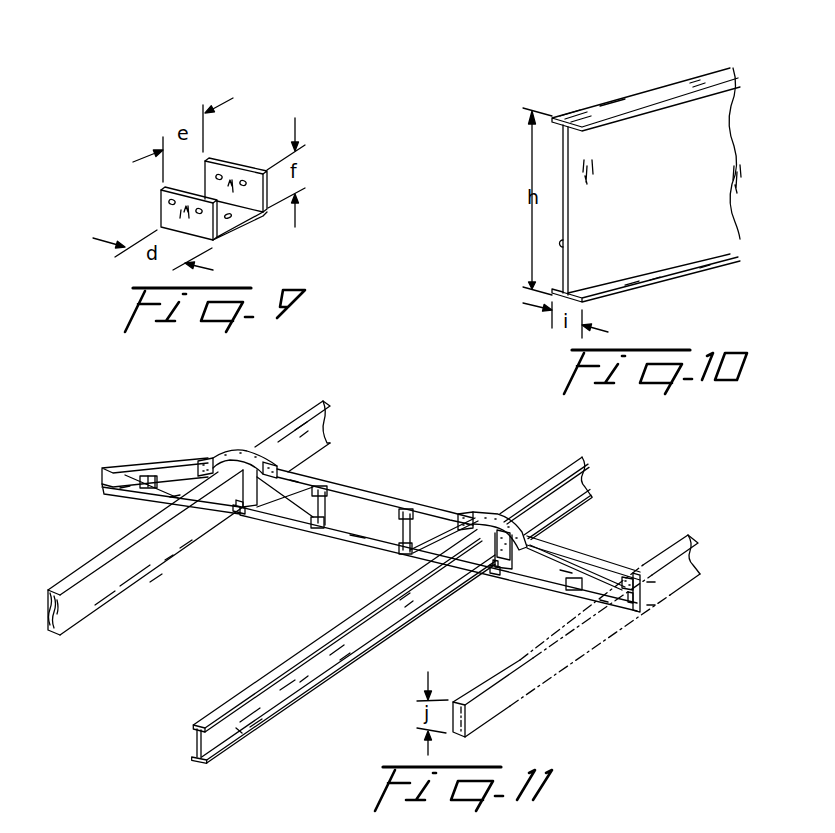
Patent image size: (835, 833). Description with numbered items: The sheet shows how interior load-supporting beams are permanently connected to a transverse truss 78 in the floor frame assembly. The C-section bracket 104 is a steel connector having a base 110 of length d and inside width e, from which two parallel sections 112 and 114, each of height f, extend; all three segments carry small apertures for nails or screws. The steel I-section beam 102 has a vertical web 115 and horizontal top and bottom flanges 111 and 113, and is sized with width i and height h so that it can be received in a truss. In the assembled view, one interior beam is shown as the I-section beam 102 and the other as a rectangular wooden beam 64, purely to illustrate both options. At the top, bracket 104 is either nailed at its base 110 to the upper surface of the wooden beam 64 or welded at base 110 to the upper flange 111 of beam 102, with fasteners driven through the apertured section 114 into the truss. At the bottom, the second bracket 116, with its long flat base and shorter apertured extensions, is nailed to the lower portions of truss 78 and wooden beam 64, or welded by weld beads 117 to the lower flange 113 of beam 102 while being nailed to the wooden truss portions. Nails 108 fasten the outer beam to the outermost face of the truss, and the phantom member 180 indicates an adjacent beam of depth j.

In FIG. 11, the load-supporting inner beam 64 is at (87, 602).
In FIG. 11, the truss 78 is at (381, 495).
In FIG. 10, the I-section steel beam 102 is at (646, 168).
In FIG. 11, the I-section steel beam 102 is at (377, 620).
In FIG. 9, the C-section bracket 104 is at (157, 178).
In FIG. 11, the C-section bracket 104 is at (238, 513).
In FIG. 11, the nails 108 is at (646, 592).
In FIG. 9, the base 110 is at (237, 226).
In FIG. 10, the top flange 111 is at (667, 110).
In FIG. 11, the top flange 111 is at (462, 592).
In FIG. 9, the parallel section 112 is at (160, 190).
In FIG. 10, the bottom flange 113 is at (697, 268).
In FIG. 11, the bottom flange 113 is at (583, 461).
In FIG. 9, the parallel section 114 is at (222, 176).
In FIG. 10, the vertical web 115 is at (567, 247).
In FIG. 11, the vertical web 115 is at (238, 731).
In FIG. 11, the truss to beam connecting bracket 116 is at (232, 447).
In FIG. 11, the weld beads 117 is at (483, 517).
In FIG. 11, the phantom beam 180 is at (522, 686).